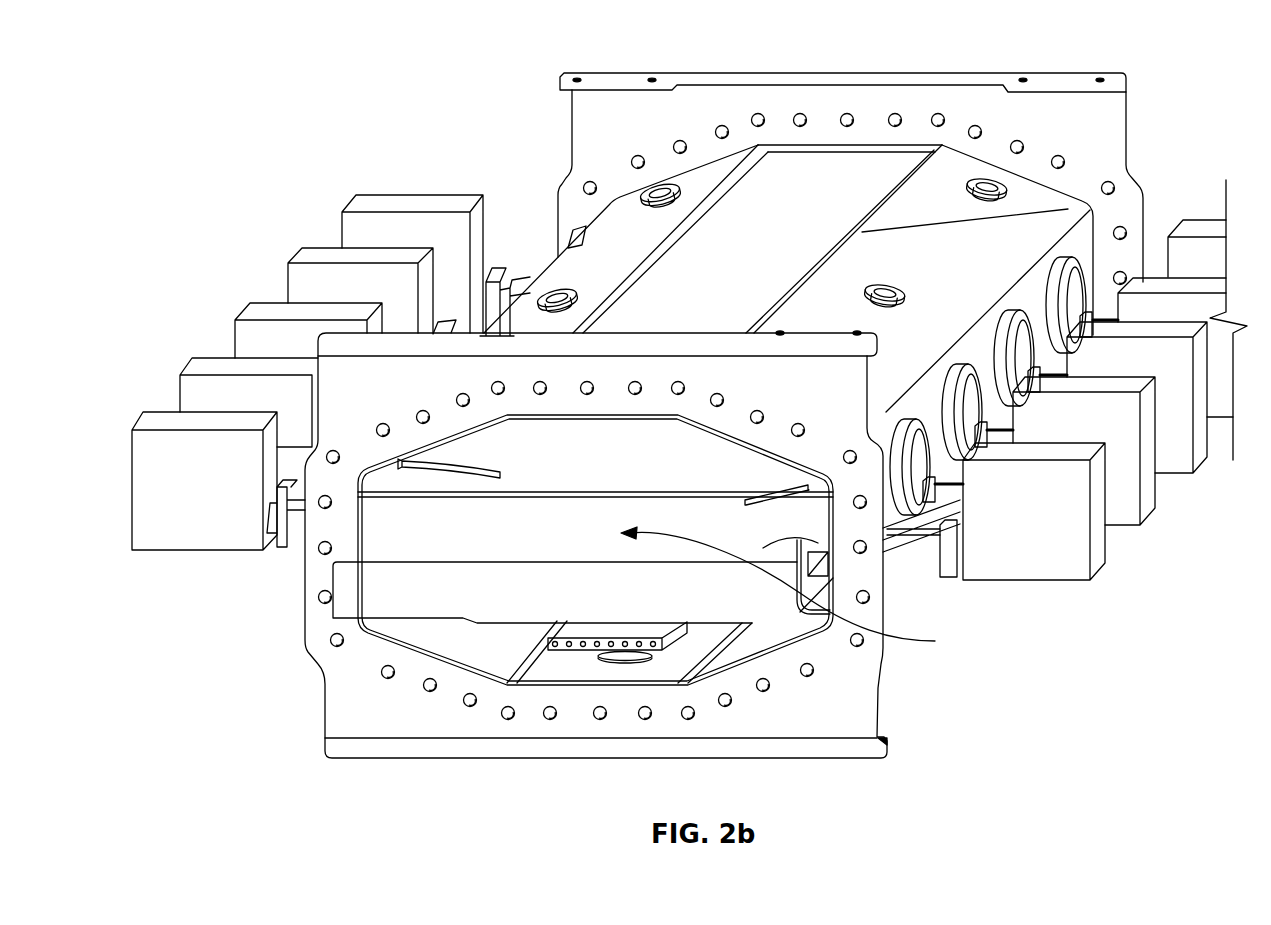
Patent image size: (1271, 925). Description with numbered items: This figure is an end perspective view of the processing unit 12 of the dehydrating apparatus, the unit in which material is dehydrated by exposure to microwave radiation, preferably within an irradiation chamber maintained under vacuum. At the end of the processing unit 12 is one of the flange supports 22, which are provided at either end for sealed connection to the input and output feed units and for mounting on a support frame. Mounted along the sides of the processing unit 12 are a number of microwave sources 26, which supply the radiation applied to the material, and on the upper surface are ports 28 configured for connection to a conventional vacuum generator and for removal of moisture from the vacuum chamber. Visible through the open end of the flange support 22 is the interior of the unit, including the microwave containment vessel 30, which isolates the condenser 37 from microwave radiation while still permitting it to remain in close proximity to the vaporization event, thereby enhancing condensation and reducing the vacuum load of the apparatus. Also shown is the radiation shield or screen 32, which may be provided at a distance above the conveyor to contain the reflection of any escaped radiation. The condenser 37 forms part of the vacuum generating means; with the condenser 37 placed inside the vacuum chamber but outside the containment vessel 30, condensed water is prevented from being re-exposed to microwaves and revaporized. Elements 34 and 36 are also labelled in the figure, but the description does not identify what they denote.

The processing unit 12 is at (183, 92).
The flange support 22 is at (885, 746).
The microwave source 26 is at (1042, 556).
The port 28 is at (991, 178).
The microwave containment vessel 30 is at (790, 590).
The radiation shield or screen 32 is at (492, 488).
The bracket 34 is at (838, 552).
The wire 36 is at (452, 440).
The condenser 37 is at (592, 648).